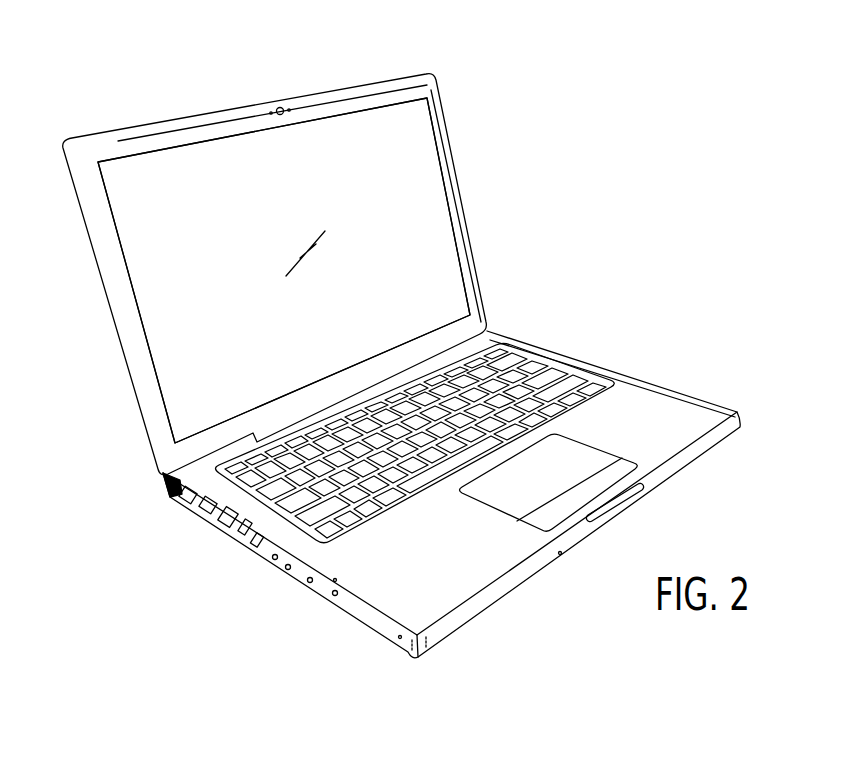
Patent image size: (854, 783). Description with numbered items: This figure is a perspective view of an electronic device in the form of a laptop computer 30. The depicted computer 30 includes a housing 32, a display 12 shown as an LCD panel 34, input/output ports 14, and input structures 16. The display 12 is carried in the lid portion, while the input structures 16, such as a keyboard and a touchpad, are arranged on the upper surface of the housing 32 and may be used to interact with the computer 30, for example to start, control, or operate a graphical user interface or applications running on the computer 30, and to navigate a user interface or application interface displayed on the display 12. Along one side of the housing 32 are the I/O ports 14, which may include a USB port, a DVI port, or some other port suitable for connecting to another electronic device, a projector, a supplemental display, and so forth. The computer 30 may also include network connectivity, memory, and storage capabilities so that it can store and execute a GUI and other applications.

The laptop computer 30 is at (228, 56).
The display 12 is at (432, 220).
The LCD panel 34 is at (412, 150).
The housing 32 is at (658, 383).
The input/output ports 14 is at (192, 514).
The input structures 16 is at (543, 370).